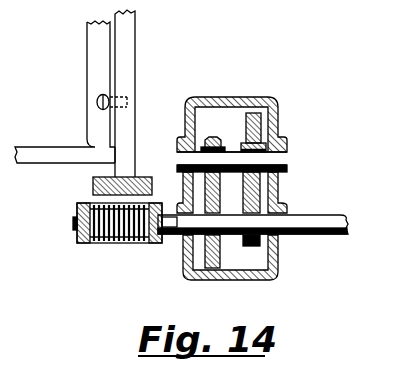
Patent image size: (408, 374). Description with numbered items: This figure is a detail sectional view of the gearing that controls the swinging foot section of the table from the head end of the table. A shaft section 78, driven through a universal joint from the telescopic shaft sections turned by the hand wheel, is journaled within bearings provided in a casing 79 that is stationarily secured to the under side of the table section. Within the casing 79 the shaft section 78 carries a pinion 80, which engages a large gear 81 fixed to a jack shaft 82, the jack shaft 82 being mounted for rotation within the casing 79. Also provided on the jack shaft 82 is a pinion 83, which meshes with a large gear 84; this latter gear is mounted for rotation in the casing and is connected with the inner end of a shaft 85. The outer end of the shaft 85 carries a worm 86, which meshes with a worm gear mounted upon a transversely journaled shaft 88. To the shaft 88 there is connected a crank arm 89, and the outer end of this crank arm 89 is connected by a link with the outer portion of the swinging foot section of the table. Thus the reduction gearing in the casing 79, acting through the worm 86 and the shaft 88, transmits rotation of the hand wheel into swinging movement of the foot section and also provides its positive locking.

The shaft section 78 is at (337, 213).
The casing 79 is at (281, 120).
The pinion 80 is at (252, 247).
The large gear 81 is at (252, 113).
The jack shaft 82 is at (273, 158).
The pinion 83 is at (212, 137).
The large gear 84 is at (208, 268).
The shaft 85 is at (173, 227).
The worm 86 is at (122, 241).
The shaft 88 is at (125, 42).
The crank arm 89 is at (32, 147).